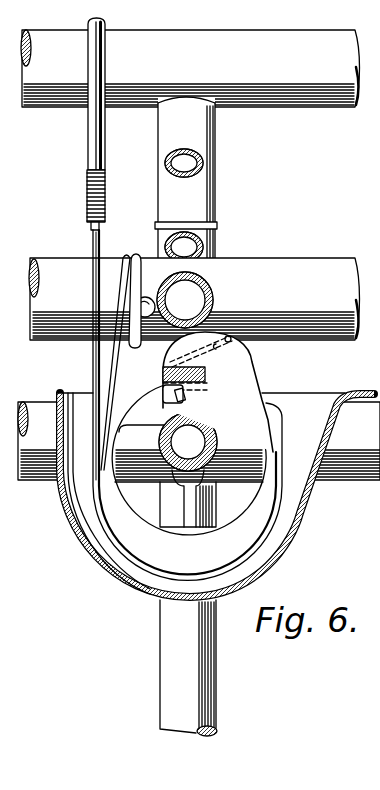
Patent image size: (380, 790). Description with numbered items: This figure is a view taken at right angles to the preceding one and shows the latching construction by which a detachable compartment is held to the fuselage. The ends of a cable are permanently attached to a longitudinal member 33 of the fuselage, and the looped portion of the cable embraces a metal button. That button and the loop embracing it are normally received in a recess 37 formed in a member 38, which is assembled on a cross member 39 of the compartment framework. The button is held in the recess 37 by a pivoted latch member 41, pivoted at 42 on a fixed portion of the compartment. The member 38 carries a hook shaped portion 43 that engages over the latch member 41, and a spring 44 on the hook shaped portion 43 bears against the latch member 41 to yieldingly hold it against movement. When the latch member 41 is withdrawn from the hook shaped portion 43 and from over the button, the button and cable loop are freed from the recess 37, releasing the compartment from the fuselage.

The longitudinal member 33 is at (273, 98).
The recess 37 is at (162, 405).
The member 38 is at (266, 450).
The cross member 39 is at (198, 432).
The pivoted latch member 41 is at (253, 378).
The pivot 42 is at (190, 425).
The hook shaped portion 43 is at (240, 353).
The spring 44 is at (170, 357).